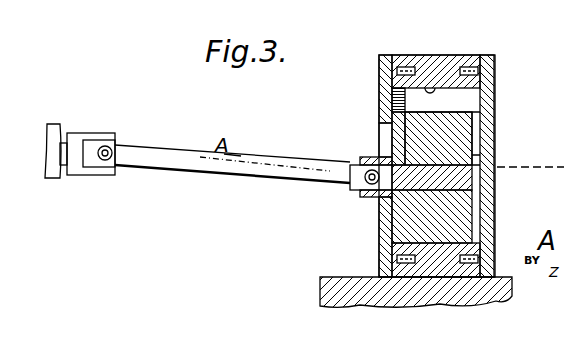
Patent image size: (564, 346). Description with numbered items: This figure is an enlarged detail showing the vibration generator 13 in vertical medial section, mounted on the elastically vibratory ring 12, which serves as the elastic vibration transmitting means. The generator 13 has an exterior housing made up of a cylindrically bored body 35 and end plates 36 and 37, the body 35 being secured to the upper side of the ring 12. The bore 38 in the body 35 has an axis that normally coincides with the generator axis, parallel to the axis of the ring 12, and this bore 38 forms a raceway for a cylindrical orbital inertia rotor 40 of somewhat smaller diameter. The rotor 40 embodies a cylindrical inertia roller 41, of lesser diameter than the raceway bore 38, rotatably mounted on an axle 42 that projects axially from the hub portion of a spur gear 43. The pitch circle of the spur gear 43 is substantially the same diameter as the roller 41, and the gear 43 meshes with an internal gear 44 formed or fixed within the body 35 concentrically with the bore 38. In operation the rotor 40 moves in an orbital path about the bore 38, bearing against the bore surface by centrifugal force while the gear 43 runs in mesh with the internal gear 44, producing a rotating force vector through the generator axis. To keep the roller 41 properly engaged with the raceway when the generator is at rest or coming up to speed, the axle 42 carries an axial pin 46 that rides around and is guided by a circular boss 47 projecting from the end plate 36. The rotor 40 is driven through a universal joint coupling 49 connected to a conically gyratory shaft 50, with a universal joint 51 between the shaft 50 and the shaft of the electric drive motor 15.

The elastically vibratory ring 12 is at (338, 277).
The vibration generator 13 is at (505, 94).
The electric drive motor 15 is at (53, 124).
The cylindrically bored body 35 is at (420, 55).
The end plate 36 is at (493, 56).
The end plate 37 is at (383, 55).
The bore 38 is at (437, 88).
The orbital inertia rotor 40 is at (469, 115).
The cylindrical inertia roller 41 is at (468, 135).
The axle 42 is at (457, 210).
The spur gear 43 is at (392, 138).
The internal gear 44 is at (392, 96).
The axial pin 46 is at (476, 183).
The circular boss 47 is at (476, 157).
The universal joint coupling 49 is at (362, 190).
The conically gyratory shaft 50 is at (258, 173).
The universal joint 51 is at (112, 135).